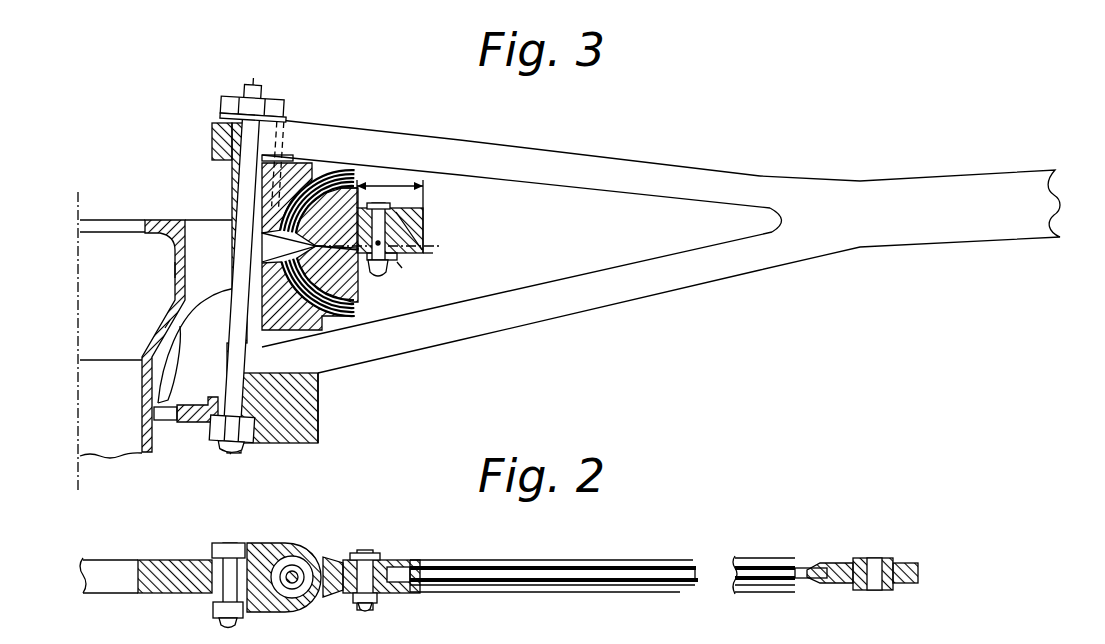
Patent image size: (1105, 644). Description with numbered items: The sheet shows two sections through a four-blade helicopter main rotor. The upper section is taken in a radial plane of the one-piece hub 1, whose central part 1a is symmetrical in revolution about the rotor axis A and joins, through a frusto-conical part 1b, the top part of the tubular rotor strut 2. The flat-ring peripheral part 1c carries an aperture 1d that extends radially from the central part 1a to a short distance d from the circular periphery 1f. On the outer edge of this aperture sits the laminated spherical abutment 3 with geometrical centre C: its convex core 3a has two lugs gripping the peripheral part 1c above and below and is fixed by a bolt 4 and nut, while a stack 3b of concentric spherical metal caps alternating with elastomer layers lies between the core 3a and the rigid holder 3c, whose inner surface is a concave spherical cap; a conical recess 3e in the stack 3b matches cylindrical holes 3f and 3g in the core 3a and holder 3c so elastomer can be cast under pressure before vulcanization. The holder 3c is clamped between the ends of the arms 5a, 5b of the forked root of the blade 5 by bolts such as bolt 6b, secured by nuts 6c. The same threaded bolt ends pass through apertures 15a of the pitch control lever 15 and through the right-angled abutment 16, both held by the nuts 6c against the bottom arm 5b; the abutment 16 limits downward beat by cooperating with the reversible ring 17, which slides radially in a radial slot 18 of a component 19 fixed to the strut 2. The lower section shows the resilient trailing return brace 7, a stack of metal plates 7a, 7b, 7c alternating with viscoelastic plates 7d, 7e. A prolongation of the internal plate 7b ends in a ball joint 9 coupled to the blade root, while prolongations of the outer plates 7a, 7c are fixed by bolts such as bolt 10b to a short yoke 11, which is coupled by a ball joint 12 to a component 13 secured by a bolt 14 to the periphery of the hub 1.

In FIG. 3, the rotor axis A is at (78, 200).
In FIG. 3, the hub 1 is at (158, 216).
In FIG. 3, the central part 1a is at (176, 270).
In FIG. 3, the frusto-conical part 1b is at (165, 333).
In FIG. 3, the peripheral part 1c is at (213, 220).
In FIG. 3, the aperture 1d is at (233, 263).
In FIG. 3, the circular periphery 1f is at (425, 235).
In FIG. 3, the rotor strut 2 is at (153, 448).
In FIG. 3, the laminated spherical abutment 3 is at (330, 172).
In FIG. 3, the core 3a is at (337, 263).
In FIG. 3, the stack 3b is at (325, 290).
In FIG. 3, the holder 3c is at (305, 175).
In FIG. 3, the conical axial recess 3e is at (345, 200).
In FIG. 3, the cylindrical hole 3f is at (397, 263).
In FIG. 3, the cylindrical hole 3g is at (212, 127).
In FIG. 3, the bolt 4 is at (410, 218).
In FIG. 3, the blade 5 is at (885, 200).
In FIG. 3, the top arm 5a is at (597, 167).
In FIG. 3, the bottom arm 5b is at (497, 317).
In FIG. 3, the bolt 6b is at (280, 245).
In FIG. 3, the nut 6c is at (277, 447).
In FIG. 3, the pitch control lever 15 is at (323, 398).
In FIG. 3, the aperture 15a is at (318, 398).
In FIG. 3, the abutment 16 is at (227, 453).
In FIG. 3, the reversible ring 17 is at (201, 403).
In FIG. 3, the radial slot 18 is at (167, 414).
In FIG. 3, the component 19 is at (181, 355).
In FIG. 3, the distance d is at (390, 207).
In FIG. 3, the geometrical centre C is at (400, 266).
In FIG. 2, the trailing return brace 7 is at (565, 556).
In FIG. 2, the outer metal plate 7a is at (477, 563).
In FIG. 2, the internal metal plate 7b is at (493, 578).
In FIG. 2, the outer metal plate 7c is at (543, 587).
In FIG. 2, the viscoelastic plate 7d is at (627, 585).
In FIG. 2, the viscoelastic plate 7e is at (597, 585).
In FIG. 2, the ball joint 9 is at (887, 557).
In FIG. 2, the bolt 10b is at (376, 553).
In FIG. 2, the short yoke 11 is at (338, 593).
In FIG. 2, the ball joint 12 is at (293, 587).
In FIG. 2, the component 13 is at (293, 553).
In FIG. 2, the bolt 14 is at (230, 573).